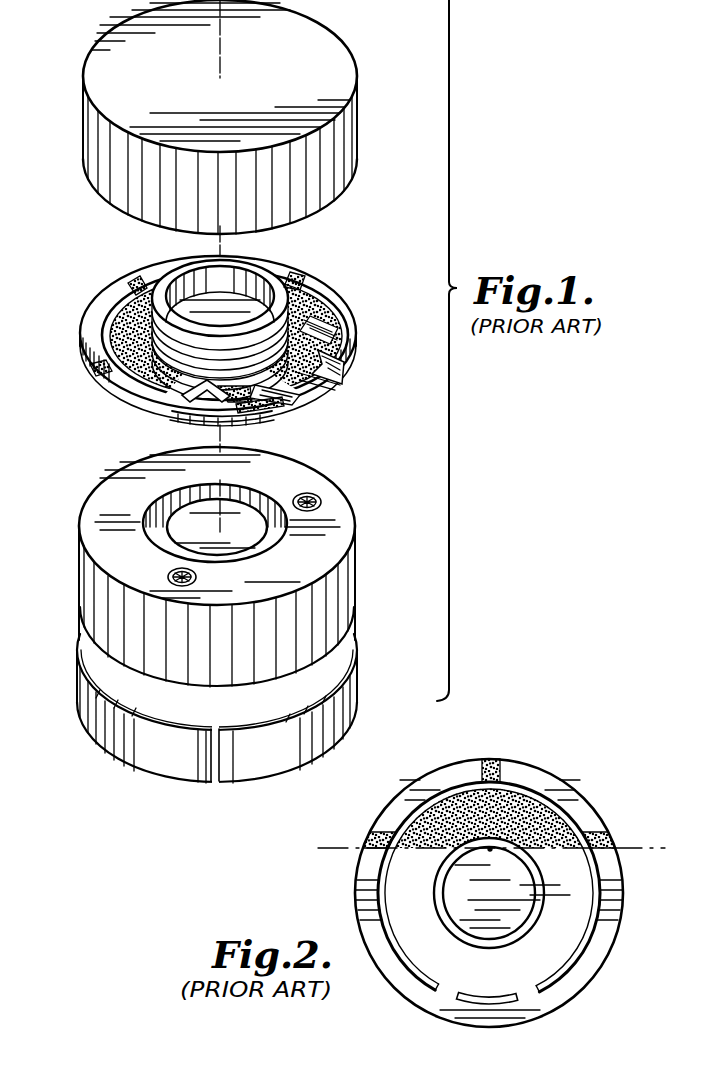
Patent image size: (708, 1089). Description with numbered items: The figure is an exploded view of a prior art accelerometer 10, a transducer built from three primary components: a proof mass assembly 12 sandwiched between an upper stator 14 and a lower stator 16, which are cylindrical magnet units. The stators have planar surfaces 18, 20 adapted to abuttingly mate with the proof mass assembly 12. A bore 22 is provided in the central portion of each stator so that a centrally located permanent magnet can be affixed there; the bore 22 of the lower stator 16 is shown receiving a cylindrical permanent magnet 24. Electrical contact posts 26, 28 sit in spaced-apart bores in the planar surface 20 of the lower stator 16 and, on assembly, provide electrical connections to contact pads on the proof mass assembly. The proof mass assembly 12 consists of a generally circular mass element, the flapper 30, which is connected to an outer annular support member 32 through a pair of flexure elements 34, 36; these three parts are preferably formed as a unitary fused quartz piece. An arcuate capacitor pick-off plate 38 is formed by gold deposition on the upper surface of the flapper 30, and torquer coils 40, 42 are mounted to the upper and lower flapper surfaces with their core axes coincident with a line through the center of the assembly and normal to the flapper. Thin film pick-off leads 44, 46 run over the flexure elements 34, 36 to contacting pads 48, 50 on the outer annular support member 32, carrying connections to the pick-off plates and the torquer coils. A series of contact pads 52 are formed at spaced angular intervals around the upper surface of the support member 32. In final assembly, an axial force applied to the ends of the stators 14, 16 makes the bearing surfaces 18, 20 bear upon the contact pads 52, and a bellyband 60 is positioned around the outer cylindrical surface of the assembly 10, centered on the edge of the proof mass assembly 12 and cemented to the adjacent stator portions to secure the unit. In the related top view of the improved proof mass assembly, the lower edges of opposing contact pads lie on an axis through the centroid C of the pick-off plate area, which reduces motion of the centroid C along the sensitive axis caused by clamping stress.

In FIG. 1, the accelerometer 10 is at (75, 238).
In FIG. 1, the upper stator 14 is at (362, 100).
In FIG. 1, the planar surface 18 is at (330, 205).
In FIG. 1, the proof mass assembly 12 is at (214, 343).
In FIG. 1, the outer annular support member 32 is at (78, 352).
In FIG. 1, the flapper 30 is at (85, 332).
In FIG. 1, the capacitor pick-off plate 38 is at (105, 302).
In FIG. 1, the upper torquer coil 40 is at (262, 267).
In FIG. 1, the contact pads 52 is at (137, 281).
In FIG. 1, the flexure element 36 is at (320, 338).
In FIG. 1, the contacting pad 50 is at (350, 360).
In FIG. 1, the pick-off lead 46 is at (338, 384).
In FIG. 1, the pick-off lead 44 is at (298, 400).
In FIG. 1, the contacting pad 48 is at (272, 412).
In FIG. 1, the lower torquer coil 42 is at (242, 424).
In FIG. 1, the flexure element 34 is at (165, 415).
In FIG. 1, the lower stator 16 is at (214, 567).
In FIG. 1, the planar surface 20 is at (340, 542).
In FIG. 1, the bore 22 is at (150, 504).
In FIG. 1, the permanent magnet 24 is at (240, 510).
In FIG. 1, the electrical contact post 26 is at (322, 504).
In FIG. 1, the electrical contact post 28 is at (168, 576).
In FIG. 1, the bellyband 60 is at (160, 768).
In FIG. 2, the centroid C is at (490, 851).